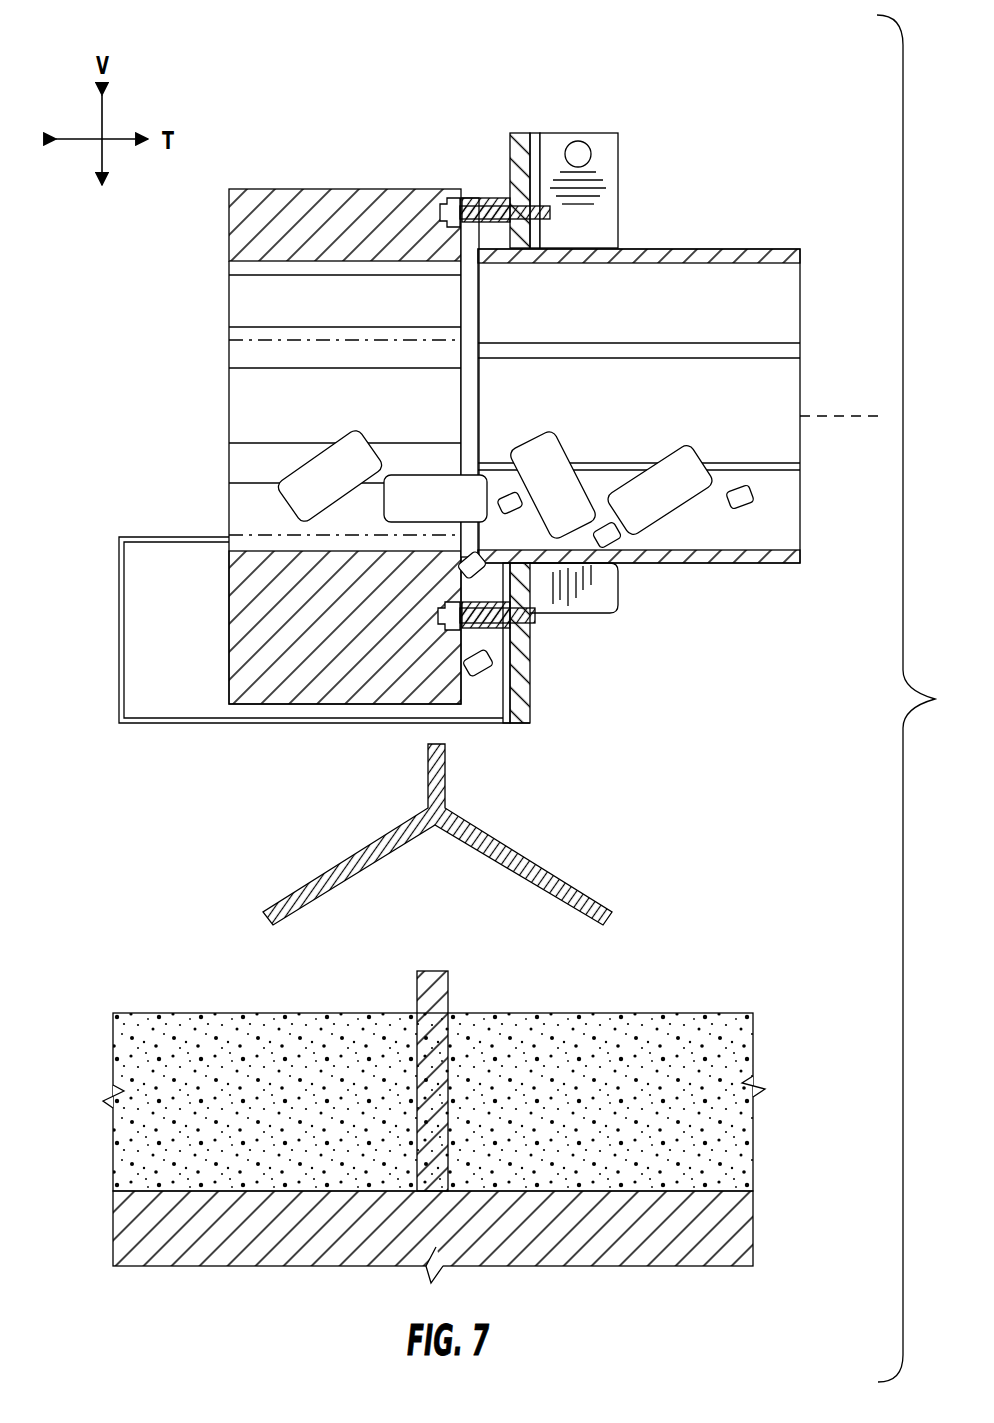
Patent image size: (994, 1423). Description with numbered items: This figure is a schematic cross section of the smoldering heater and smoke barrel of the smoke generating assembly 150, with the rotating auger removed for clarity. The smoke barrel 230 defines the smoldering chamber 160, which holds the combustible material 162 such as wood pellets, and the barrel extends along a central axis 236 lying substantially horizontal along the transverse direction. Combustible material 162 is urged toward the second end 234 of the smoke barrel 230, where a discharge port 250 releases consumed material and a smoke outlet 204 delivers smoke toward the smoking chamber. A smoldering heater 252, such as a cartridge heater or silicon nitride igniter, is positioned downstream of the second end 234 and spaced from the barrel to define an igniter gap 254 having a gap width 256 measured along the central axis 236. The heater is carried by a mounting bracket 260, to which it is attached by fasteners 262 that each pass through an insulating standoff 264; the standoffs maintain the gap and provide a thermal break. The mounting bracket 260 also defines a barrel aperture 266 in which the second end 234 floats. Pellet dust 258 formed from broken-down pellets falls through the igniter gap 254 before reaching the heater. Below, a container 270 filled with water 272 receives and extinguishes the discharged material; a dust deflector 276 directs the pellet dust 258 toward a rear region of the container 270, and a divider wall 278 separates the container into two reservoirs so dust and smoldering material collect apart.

The smoke generating assembly 150 is at (700, 108).
The smoldering chamber 160 is at (741, 325).
The combustible material 162 is at (454, 512).
The smoke outlet 204 is at (198, 288).
The smoke barrel 230 is at (757, 248).
The second end 234 is at (504, 276).
The central axis 236 is at (838, 415).
The discharge port 250 is at (226, 352).
The smoldering heater 252 is at (300, 207).
The igniter gap 254 is at (468, 436).
The gap width 256 is at (402, 392).
The pellet dust 258 is at (514, 695).
The mounting bracket 260 is at (522, 140).
The fasteners 262 is at (478, 202).
The insulating standoff 264 is at (492, 200).
The barrel aperture 266 is at (540, 243).
The container 270 is at (565, 1250).
The water 272 is at (266, 1117).
The dust deflector 276 is at (492, 858).
The divider wall 278 is at (437, 993).